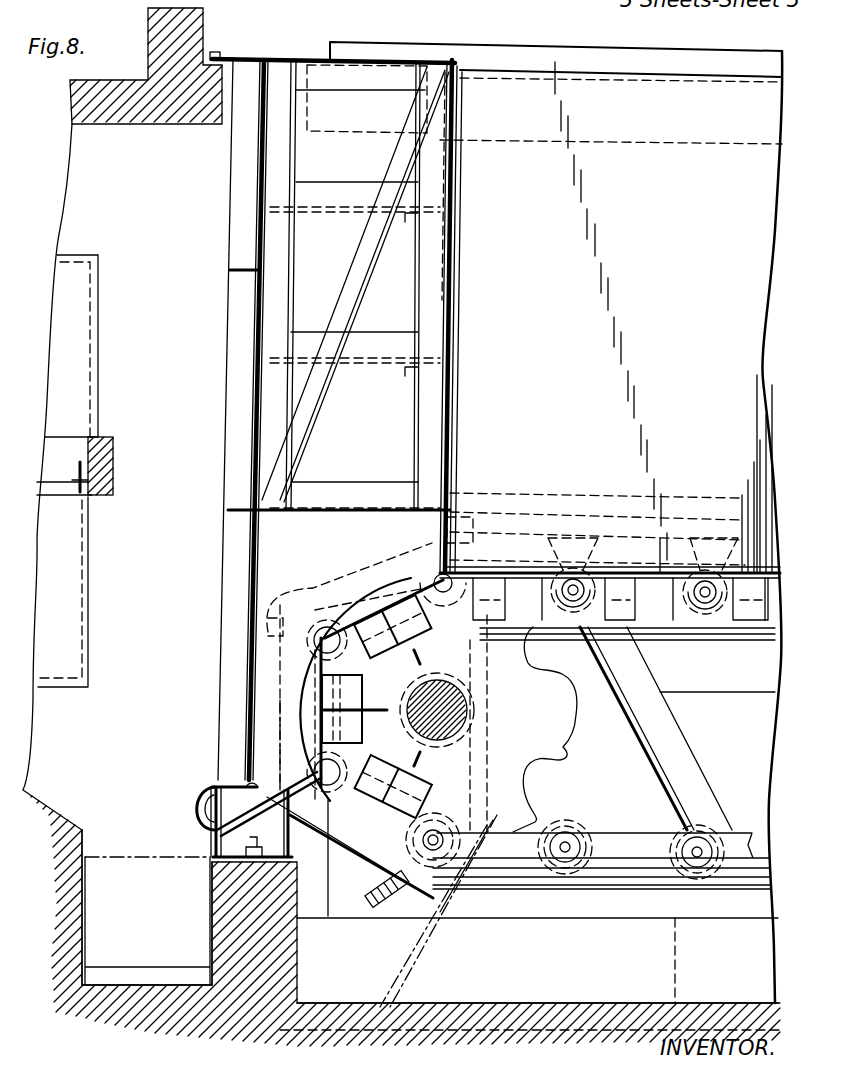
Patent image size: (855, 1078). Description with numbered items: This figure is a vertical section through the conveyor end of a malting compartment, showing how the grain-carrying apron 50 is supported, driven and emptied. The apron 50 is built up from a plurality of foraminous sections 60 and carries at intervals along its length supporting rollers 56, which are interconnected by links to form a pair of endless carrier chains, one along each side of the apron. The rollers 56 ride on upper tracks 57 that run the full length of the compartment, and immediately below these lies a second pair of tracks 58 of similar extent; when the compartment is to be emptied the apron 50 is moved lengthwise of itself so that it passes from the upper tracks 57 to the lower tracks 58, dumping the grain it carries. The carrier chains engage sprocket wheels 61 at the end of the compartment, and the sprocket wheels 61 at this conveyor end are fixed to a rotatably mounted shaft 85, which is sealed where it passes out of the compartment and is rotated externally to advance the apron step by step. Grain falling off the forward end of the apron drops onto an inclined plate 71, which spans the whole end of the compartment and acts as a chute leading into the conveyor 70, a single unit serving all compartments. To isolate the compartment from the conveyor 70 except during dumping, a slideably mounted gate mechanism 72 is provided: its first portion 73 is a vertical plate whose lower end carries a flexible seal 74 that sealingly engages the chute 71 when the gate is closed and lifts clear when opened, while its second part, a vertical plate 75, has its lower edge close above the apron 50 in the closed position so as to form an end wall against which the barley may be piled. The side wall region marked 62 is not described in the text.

The apron 50 is at (519, 562).
The supporting rollers 56 is at (603, 569).
The tracks 57 is at (684, 628).
The second pair of tracks 58 is at (630, 880).
The foraminous sections 60 is at (320, 592).
The sprocket wheels 61 is at (558, 745).
The side wall 62 is at (758, 376).
The conveyor 70 is at (132, 960).
The inclined plate 71 is at (262, 782).
The gate mechanism 72 is at (470, 300).
The first portion 73 is at (256, 561).
The flexible seal 74 is at (200, 810).
The vertical plate 75 is at (450, 446).
The shaft 85 is at (456, 716).